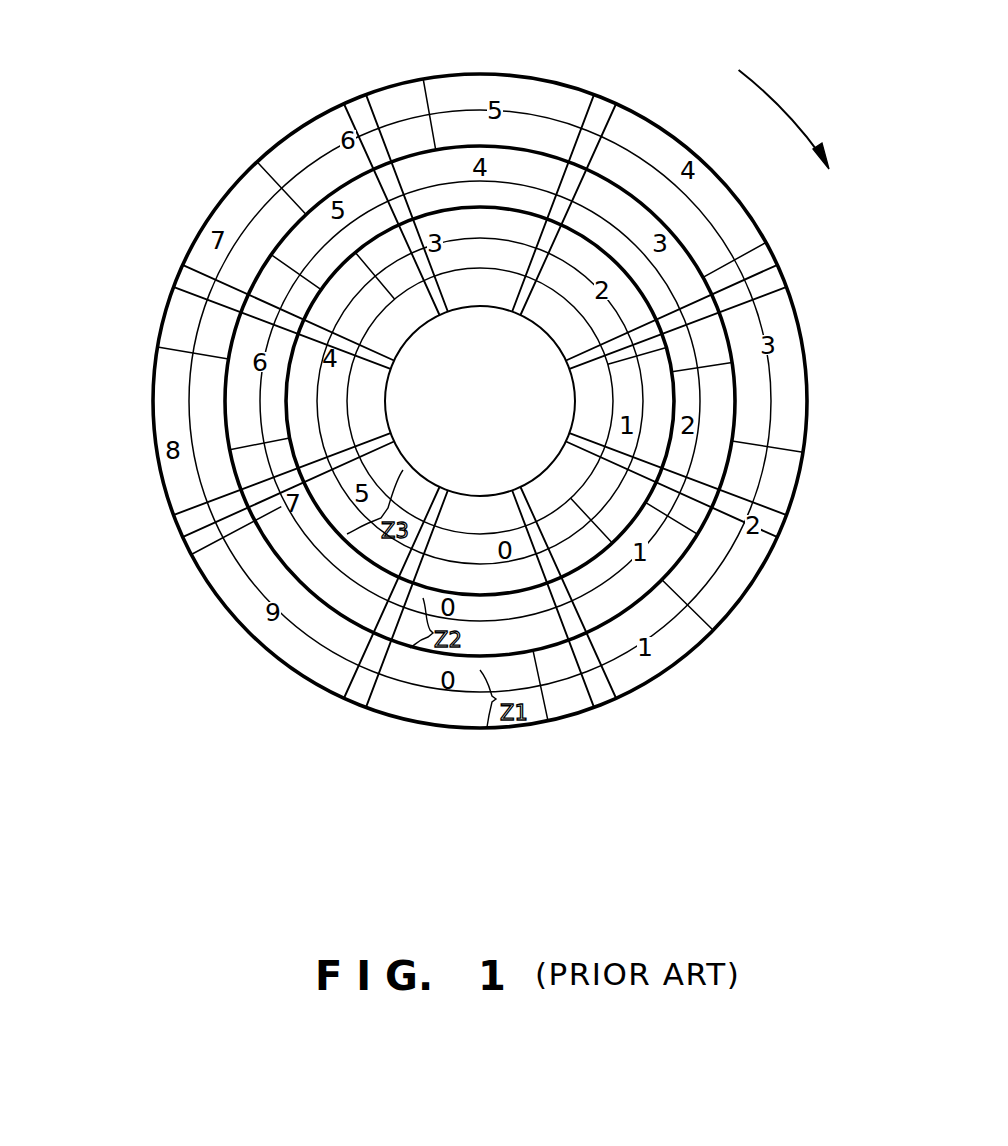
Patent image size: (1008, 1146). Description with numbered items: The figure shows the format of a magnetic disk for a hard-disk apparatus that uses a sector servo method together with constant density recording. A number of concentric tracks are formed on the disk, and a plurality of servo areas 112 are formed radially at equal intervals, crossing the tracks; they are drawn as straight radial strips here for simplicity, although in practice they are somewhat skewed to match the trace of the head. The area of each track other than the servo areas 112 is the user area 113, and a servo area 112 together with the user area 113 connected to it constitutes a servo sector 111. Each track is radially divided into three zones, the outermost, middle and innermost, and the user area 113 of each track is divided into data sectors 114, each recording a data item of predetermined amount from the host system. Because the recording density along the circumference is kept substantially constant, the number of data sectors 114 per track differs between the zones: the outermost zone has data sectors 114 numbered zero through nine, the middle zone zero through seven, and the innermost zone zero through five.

The servo sector 111 is at (862, 282).
The servo area 112 is at (348, 103).
The user area 113 is at (609, 714).
The data sector 114 is at (510, 220).